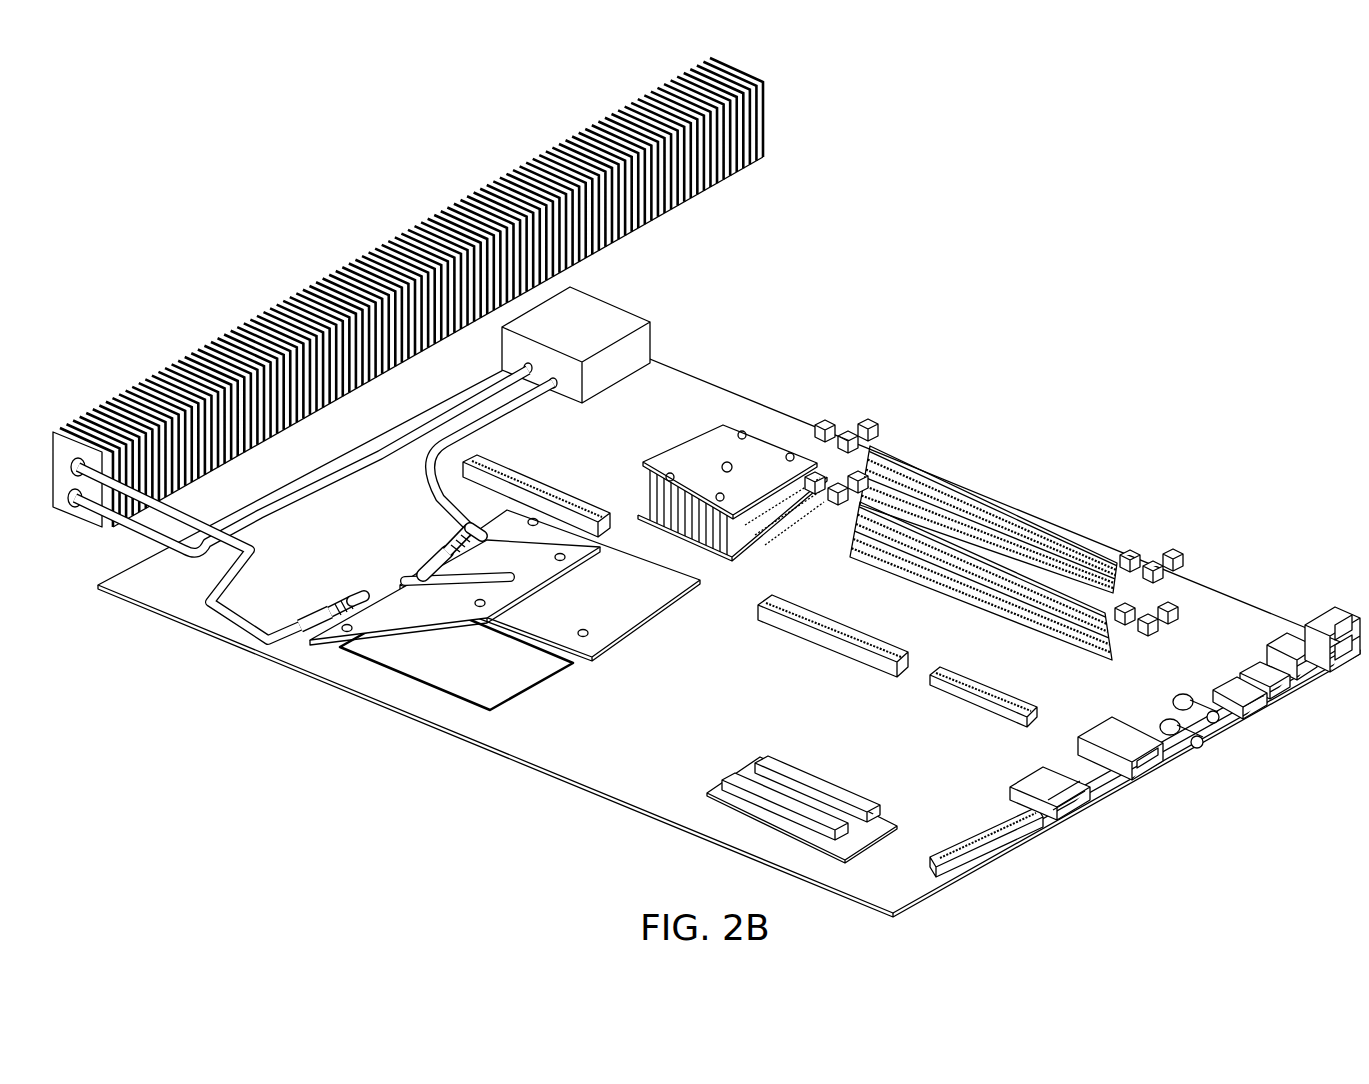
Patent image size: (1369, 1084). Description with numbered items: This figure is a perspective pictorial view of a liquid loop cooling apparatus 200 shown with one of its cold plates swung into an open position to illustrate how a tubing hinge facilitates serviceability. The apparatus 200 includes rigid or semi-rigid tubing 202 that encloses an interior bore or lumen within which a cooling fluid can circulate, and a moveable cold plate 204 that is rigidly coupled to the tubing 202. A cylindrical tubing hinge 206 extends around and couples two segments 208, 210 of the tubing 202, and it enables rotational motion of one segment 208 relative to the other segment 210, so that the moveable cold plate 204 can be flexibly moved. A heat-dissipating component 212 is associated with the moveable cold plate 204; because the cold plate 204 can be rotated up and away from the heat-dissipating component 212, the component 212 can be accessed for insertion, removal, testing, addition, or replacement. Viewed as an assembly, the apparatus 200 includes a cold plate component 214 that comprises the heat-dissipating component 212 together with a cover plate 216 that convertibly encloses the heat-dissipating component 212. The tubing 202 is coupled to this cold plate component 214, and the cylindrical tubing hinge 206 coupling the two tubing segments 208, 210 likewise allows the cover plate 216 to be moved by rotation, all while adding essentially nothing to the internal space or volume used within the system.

The liquid loop cooling apparatus 200 is at (729, 613).
The tubing 202 is at (280, 648).
The moveable cold plate 204 is at (620, 573).
The cylindrical tubing hinge 206 is at (340, 603).
The tubing segment 208 is at (328, 617).
The tubing segment 210 is at (355, 600).
The heat-dissipating component 212 is at (425, 676).
The cold plate component 214 is at (359, 741).
The cover plate 216 is at (330, 646).